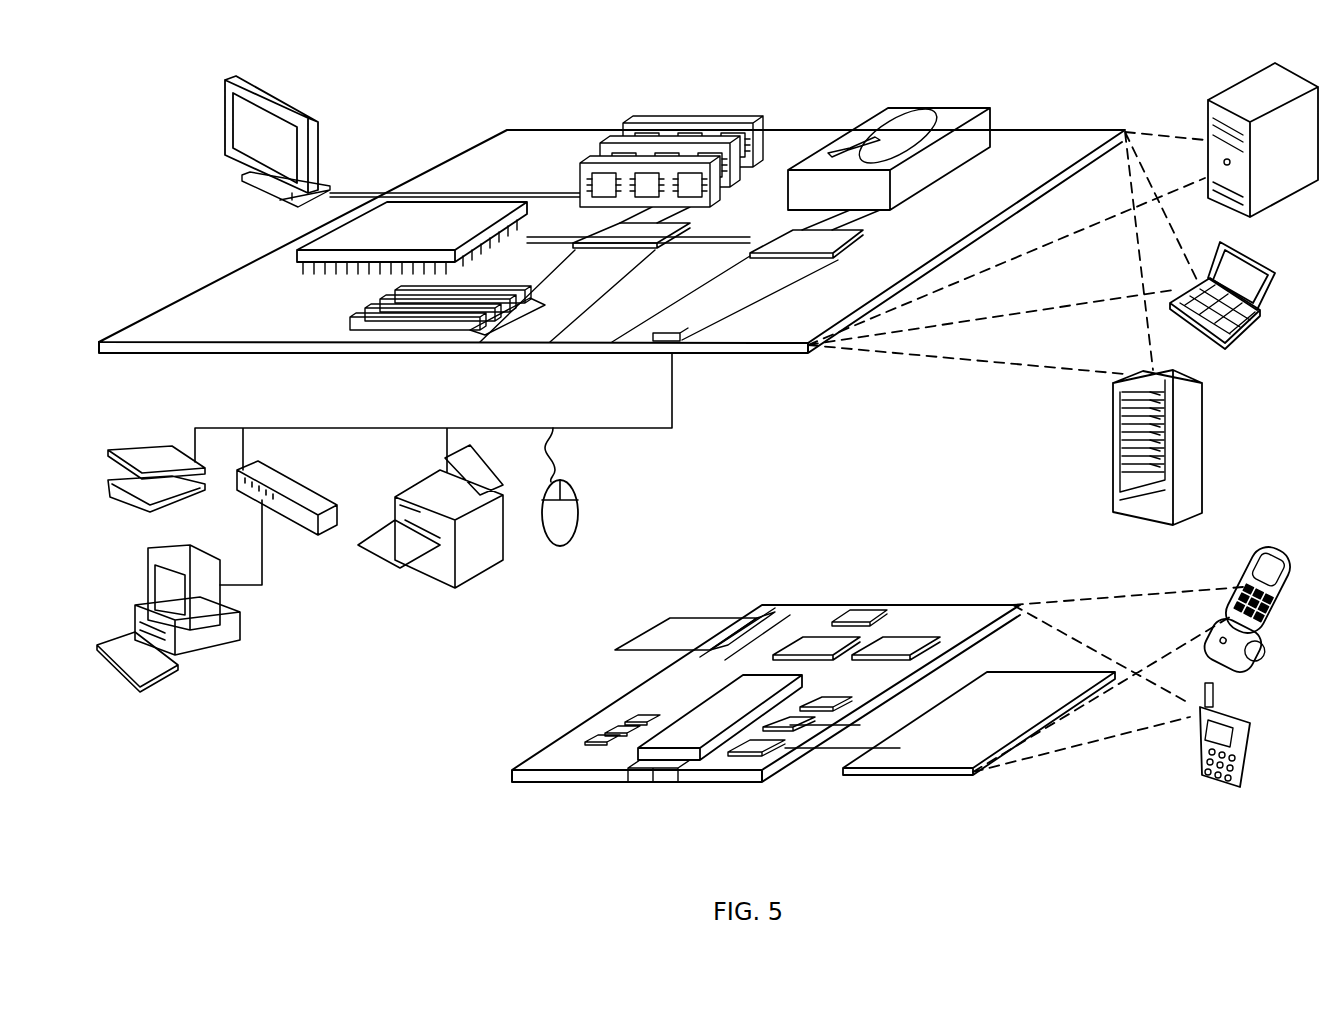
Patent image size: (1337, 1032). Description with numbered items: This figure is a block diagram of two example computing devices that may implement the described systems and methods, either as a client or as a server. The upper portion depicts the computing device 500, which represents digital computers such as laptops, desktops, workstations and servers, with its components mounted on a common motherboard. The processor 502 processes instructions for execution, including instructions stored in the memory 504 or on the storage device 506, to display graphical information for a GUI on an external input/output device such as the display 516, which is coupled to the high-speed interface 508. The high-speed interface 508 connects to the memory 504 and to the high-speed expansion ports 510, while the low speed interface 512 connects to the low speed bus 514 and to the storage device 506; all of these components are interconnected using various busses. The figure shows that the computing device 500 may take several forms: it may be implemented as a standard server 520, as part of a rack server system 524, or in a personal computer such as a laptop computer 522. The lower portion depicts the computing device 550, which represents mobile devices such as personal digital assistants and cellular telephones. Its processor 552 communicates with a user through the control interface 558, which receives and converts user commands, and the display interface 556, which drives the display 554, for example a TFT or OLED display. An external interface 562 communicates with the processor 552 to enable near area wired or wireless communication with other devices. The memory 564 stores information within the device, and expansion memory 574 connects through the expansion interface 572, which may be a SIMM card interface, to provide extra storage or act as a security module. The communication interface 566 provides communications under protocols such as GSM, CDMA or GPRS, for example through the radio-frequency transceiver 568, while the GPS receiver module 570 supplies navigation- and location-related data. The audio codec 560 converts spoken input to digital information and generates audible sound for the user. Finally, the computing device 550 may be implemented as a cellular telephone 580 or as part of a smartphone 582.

The computing device 500 is at (428, 100).
The processor 502 is at (300, 253).
The memory 504 is at (637, 125).
The storage device 506 is at (888, 118).
The high-speed interface 508 is at (607, 237).
The high-speed expansion ports 510 is at (373, 315).
The low speed interface 512 is at (784, 240).
The low speed bus 514 is at (680, 342).
The display 516 is at (236, 76).
The standard server 520 is at (1207, 118).
The laptop computer 522 is at (1277, 262).
The rack server system 524 is at (1110, 470).
The computing device 550 is at (487, 782).
The processor 552 is at (693, 740).
The display 554 is at (955, 773).
The display interface 556 is at (763, 752).
The control interface 558 is at (800, 722).
The audio codec 560 is at (823, 700).
The external interface 562 is at (657, 775).
The memory 564 is at (605, 740).
The communication interface 566 is at (815, 645).
The transceiver 568 is at (897, 645).
The GPS receiver module 570 is at (870, 615).
The expansion interface 572 is at (745, 618).
The expansion memory 574 is at (670, 618).
The cellular telephone 580 is at (1265, 560).
The smartphone 582 is at (1195, 742).